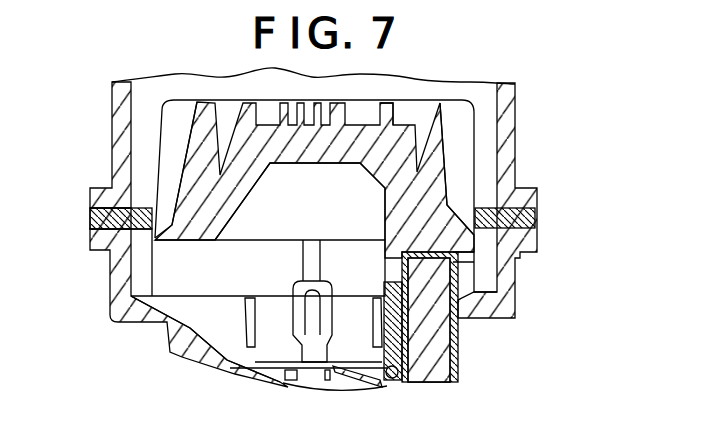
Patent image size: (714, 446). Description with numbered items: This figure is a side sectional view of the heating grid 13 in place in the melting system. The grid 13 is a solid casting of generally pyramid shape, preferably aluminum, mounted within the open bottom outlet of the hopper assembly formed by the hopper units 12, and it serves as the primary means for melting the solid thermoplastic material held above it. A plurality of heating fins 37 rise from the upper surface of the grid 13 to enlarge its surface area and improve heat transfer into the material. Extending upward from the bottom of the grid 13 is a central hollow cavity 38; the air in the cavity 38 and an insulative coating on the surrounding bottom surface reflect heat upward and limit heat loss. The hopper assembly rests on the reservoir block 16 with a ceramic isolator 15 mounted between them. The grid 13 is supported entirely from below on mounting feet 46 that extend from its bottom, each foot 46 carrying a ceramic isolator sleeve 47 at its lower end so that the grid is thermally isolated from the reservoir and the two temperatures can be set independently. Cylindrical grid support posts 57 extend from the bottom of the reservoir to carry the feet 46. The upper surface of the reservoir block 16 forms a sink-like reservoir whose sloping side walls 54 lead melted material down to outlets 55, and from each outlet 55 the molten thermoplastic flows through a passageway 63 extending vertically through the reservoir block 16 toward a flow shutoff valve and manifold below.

The hopper unit 12 is at (118, 132).
The heating grid 13 is at (221, 108).
The ceramic isolator 15 is at (97, 211).
The reservoir block 16 is at (123, 308).
The heating fins 37 is at (384, 122).
The central hollow cavity 38 is at (243, 190).
The mounting feet 46 is at (433, 335).
The ceramic isolator sleeve 47 is at (390, 379).
The sloping side walls 54 is at (197, 340).
The outlets 55 is at (297, 385).
The grid support posts 57 is at (390, 320).
The passageway 63 is at (315, 383).